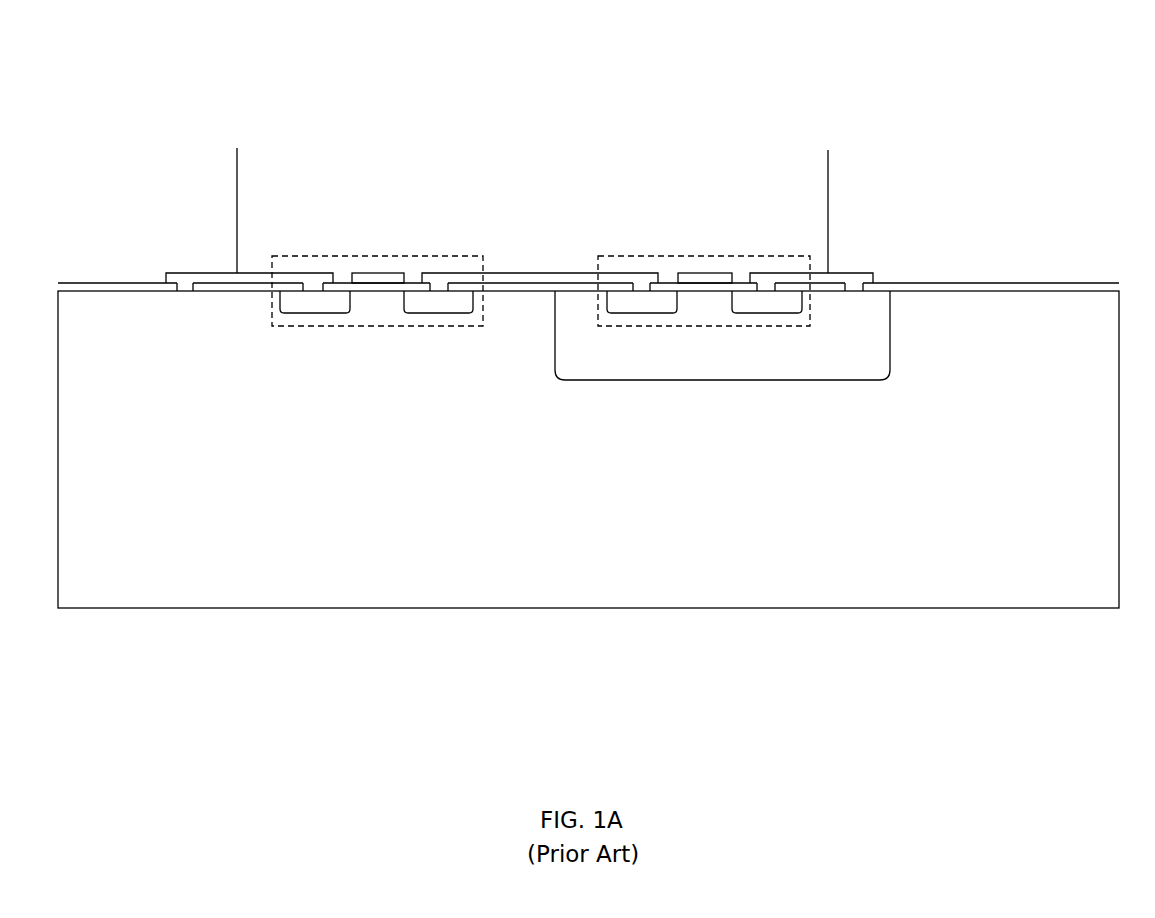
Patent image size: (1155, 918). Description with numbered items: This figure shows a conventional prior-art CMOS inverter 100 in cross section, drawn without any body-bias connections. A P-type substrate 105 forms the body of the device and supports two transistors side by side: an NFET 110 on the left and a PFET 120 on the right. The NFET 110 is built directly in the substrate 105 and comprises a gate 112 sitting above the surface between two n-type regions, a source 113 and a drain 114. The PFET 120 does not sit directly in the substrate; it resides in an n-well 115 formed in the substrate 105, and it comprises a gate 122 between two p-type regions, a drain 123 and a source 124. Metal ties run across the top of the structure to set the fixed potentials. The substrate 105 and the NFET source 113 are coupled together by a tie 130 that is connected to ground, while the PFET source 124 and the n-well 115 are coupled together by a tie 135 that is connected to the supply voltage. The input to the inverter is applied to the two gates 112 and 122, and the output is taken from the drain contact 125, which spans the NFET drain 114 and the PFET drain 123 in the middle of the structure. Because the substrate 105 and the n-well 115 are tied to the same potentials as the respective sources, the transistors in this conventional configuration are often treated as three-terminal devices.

The CMOS inverter 100 is at (1050, 70).
The P-type substrate 105 is at (607, 531).
The NFET 110 is at (413, 256).
The gate 112 is at (385, 273).
The source 113 is at (328, 313).
The drain 114 is at (426, 313).
The n-well 115 is at (723, 372).
The PFET 120 is at (687, 256).
The gate 122 is at (713, 273).
The drain 123 is at (650, 313).
The source 124 is at (750, 313).
The drain contact 125 is at (528, 273).
The tie 130 is at (183, 273).
The tie 135 is at (855, 273).